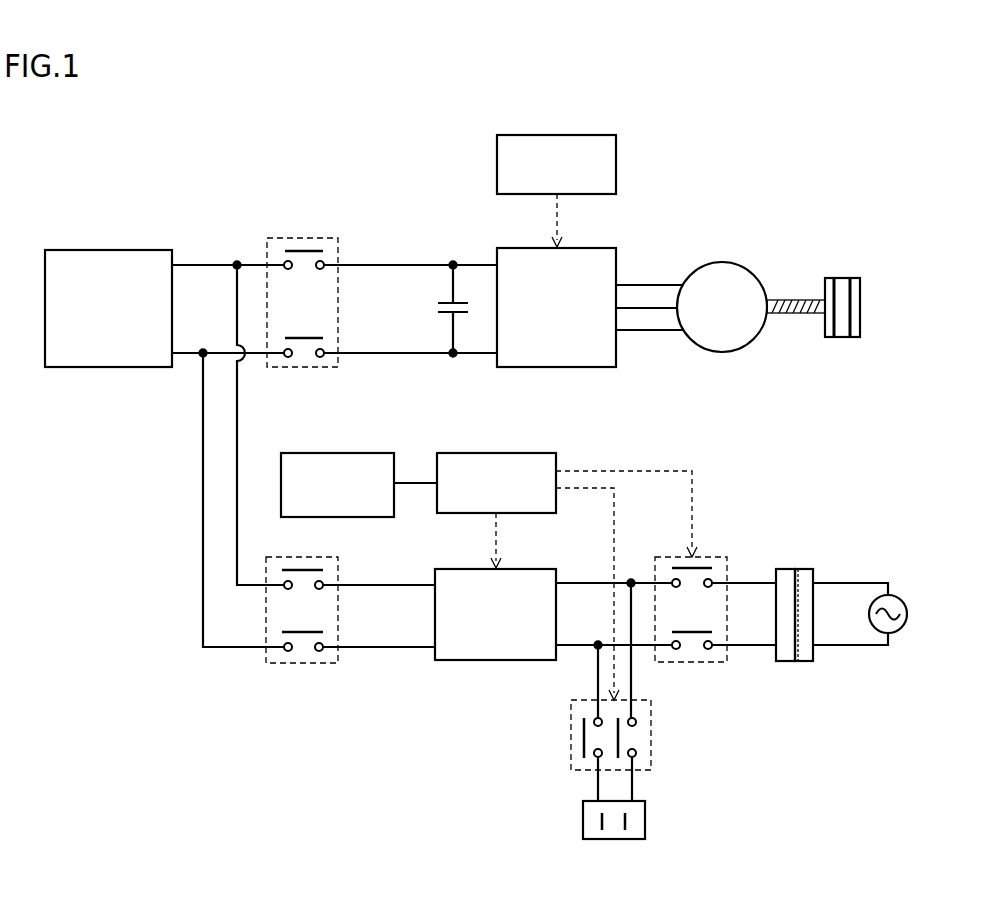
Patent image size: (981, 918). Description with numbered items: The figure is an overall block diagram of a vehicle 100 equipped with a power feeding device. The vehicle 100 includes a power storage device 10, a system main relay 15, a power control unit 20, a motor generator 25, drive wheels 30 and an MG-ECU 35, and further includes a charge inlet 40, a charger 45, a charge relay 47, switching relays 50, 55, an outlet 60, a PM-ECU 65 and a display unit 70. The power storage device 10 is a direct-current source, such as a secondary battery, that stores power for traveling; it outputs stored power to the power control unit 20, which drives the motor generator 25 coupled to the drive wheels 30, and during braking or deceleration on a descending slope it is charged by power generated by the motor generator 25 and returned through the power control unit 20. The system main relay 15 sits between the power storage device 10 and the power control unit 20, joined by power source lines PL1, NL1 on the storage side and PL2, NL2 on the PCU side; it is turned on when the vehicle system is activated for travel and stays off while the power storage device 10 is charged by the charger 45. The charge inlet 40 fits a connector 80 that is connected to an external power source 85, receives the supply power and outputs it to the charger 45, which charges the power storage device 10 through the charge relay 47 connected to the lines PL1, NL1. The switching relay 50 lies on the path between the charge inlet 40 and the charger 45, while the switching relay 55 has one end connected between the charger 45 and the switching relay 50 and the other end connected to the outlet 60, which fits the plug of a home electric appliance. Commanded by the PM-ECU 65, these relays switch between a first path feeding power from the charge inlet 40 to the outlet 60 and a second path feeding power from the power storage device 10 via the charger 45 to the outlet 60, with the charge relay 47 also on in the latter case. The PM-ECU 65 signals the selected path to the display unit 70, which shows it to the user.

The vehicle 100 is at (103, 130).
The power storage device 10 is at (118, 250).
The system main relay 15 is at (297, 238).
The power control unit 20 is at (578, 248).
The motor generator 25 is at (722, 262).
The drive wheels 30 is at (848, 278).
The MG-ECU 35 is at (578, 135).
The charge inlet 40 is at (787, 569).
The charger 45 is at (540, 568).
The charge relay 47 is at (298, 558).
The switching relay 50 is at (703, 557).
The switching relay 55 is at (651, 733).
The outlet 60 is at (645, 817).
The PM-ECU 65 is at (538, 453).
The display unit 70 is at (365, 453).
The connector 80 is at (806, 569).
The external power source 85 is at (908, 612).
The power source line PL1 is at (195, 265).
The power source line NL1 is at (187, 355).
The power source line PL2 is at (380, 265).
The power source line NL2 is at (382, 353).